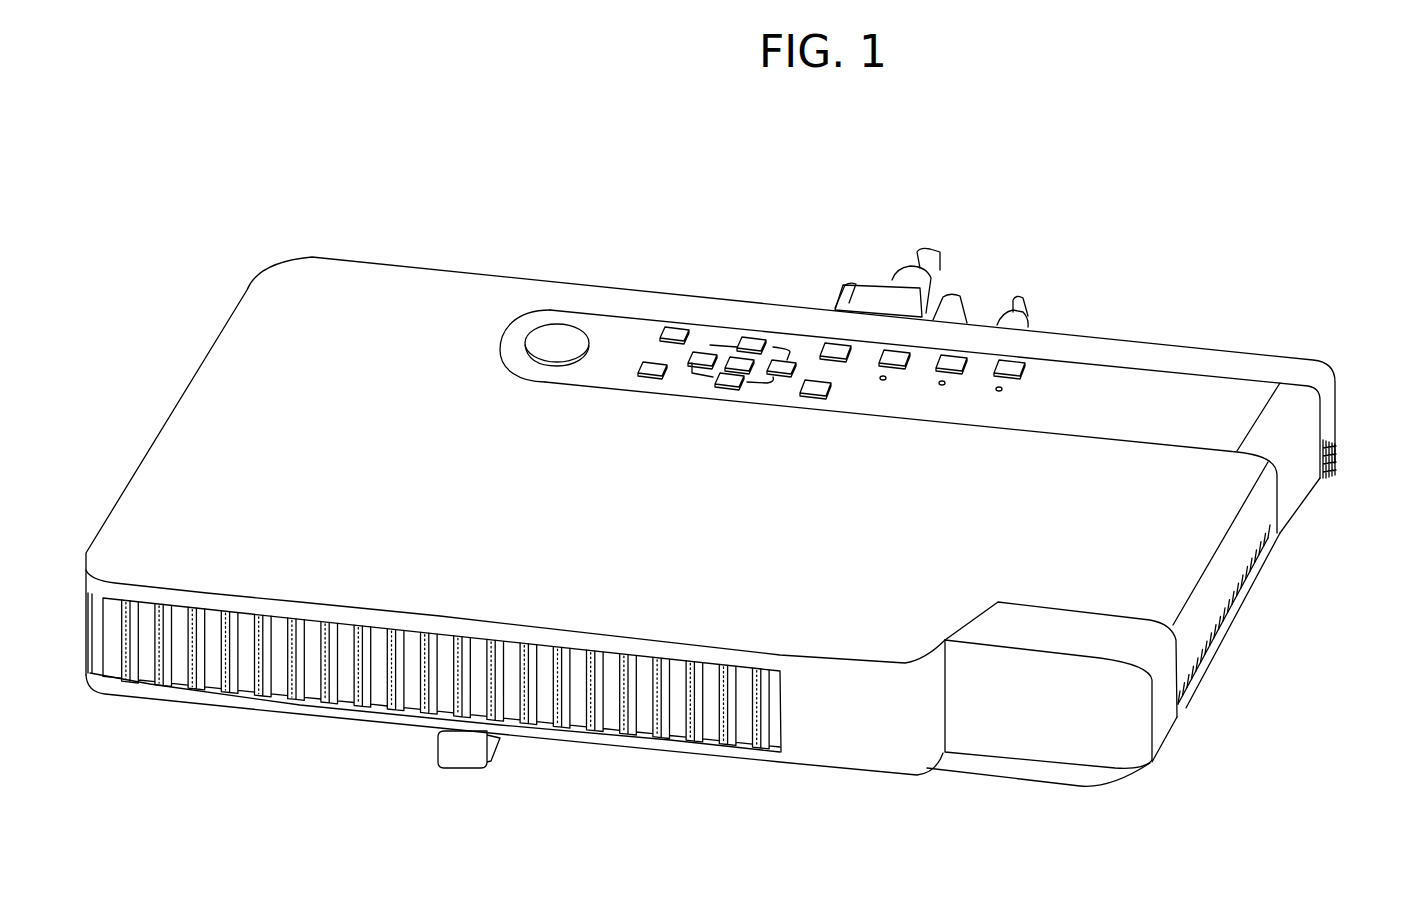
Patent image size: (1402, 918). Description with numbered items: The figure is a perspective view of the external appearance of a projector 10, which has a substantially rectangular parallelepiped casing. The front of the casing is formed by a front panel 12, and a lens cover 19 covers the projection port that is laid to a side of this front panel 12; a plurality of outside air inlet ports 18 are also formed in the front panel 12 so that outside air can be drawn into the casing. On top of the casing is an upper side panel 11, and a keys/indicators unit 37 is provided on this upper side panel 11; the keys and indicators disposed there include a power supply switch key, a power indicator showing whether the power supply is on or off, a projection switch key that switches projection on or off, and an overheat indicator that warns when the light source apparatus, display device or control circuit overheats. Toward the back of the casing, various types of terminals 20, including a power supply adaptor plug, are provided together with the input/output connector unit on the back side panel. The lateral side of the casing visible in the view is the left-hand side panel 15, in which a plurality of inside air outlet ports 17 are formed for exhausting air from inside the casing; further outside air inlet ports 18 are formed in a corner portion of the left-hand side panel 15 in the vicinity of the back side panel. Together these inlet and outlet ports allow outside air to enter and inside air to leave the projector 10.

The projector 10 is at (655, 209).
The upper side panel 11 is at (459, 283).
The front panel 12 is at (832, 748).
The left-hand side panel 15 is at (1253, 538).
The inside air outlet ports 17 is at (1217, 650).
The outside air inlet ports 18 is at (705, 737).
The lens cover 19 is at (1058, 735).
The terminals 20 is at (975, 251).
The keys/indicators unit 37 is at (757, 291).